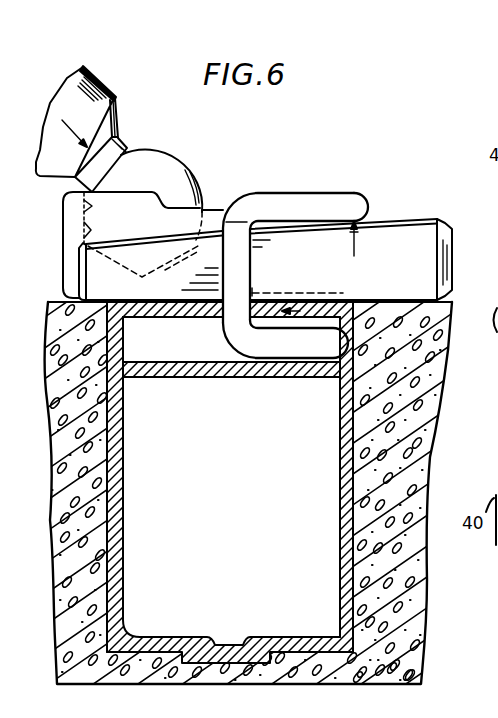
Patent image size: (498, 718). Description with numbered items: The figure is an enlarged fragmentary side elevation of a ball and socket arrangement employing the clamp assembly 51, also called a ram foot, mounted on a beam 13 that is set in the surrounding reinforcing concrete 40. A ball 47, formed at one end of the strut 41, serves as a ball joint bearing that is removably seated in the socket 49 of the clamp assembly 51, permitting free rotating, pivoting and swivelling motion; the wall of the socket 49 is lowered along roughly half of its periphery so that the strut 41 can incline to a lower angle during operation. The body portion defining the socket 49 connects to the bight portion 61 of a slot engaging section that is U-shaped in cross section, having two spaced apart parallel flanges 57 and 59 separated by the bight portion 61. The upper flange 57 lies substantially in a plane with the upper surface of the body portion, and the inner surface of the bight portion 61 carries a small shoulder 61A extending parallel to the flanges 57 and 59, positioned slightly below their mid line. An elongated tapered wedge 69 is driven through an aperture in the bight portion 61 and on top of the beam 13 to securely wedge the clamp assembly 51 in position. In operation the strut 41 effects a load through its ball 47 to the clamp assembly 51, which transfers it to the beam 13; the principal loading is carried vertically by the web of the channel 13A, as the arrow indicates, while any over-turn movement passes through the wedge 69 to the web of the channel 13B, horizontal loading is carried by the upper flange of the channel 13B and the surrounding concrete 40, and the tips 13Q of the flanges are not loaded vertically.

The beam 13 is at (249, 482).
The channel 13A is at (119, 500).
The channel 13B is at (340, 444).
The tips of the flanges 13Q is at (221, 320).
The concrete 40 is at (428, 458).
The strut 41 is at (107, 78).
The ball 47 is at (186, 165).
The socket 49 is at (65, 204).
The clamp assembly 51 is at (363, 193).
The flange 57 is at (329, 272).
The flange 59 is at (300, 347).
The bight portion 61 is at (271, 235).
The shoulder 61A is at (344, 292).
The wedge 69 is at (405, 218).